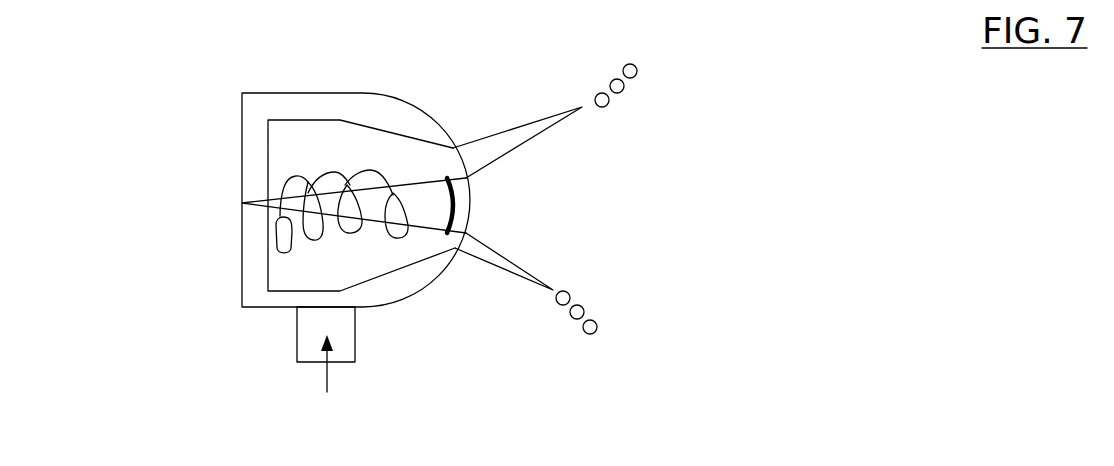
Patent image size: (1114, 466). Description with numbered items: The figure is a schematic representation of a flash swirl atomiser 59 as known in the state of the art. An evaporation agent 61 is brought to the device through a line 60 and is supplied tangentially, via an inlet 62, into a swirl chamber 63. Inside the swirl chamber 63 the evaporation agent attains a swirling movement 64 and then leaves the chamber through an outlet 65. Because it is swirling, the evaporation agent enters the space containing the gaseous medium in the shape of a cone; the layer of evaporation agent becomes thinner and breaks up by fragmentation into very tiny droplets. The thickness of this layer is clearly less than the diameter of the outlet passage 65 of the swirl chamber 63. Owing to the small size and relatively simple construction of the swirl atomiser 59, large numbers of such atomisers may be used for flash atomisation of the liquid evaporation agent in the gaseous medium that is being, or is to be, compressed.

The swirl atomiser 59 is at (200, 122).
The line 60 is at (355, 332).
The evaporation agent 61 is at (325, 378).
The inlet 62 is at (283, 235).
The swirl chamber 63 is at (255, 163).
The swirling movement 64 is at (383, 168).
The outlet 65 is at (470, 205).